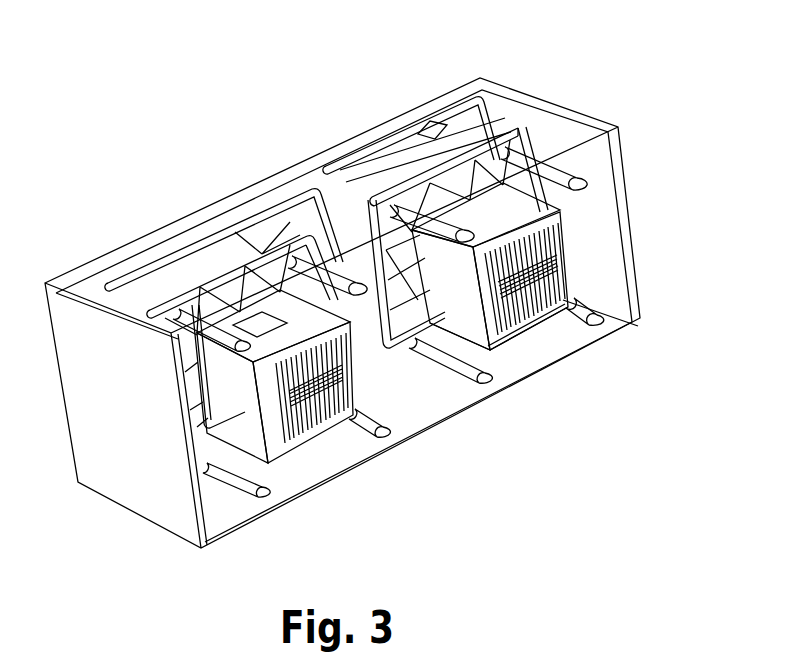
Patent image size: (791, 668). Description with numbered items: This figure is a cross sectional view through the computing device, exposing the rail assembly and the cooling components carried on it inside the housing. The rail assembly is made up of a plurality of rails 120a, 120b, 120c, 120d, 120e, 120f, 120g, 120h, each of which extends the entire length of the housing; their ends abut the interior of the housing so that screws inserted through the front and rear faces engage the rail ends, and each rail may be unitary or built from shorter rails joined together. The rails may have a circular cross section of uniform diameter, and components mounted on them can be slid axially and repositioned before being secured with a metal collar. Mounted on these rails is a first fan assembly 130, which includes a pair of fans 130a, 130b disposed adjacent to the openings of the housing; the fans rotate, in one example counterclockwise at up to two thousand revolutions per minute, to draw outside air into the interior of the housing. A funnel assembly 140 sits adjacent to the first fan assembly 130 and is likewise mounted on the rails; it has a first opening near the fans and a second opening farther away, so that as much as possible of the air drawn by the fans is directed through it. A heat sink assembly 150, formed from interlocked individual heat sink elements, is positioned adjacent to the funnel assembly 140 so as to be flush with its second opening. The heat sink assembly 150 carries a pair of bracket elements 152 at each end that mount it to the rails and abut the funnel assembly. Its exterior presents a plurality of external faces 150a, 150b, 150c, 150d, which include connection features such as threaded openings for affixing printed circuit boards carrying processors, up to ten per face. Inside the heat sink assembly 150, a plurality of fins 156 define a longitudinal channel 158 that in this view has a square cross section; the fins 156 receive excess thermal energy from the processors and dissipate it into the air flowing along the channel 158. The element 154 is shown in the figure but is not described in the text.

The first fan assembly 130 is at (117, 277).
The fan 130a is at (200, 240).
The fan 130b is at (422, 130).
The funnel assembly 140 is at (497, 130).
The bracket elements 152 is at (517, 137).
The mounting plate 154 is at (272, 325).
The fins 156 is at (534, 333).
The longitudinal channel 158 is at (552, 284).
The heat sink assembly 150 is at (317, 437).
The external face 150a is at (230, 433).
The external face 150b is at (547, 200).
The external face 150c is at (577, 268).
The external face 150d is at (553, 326).
The rail 120a is at (175, 310).
The rail 120b is at (308, 262).
The rail 120c is at (446, 226).
The rail 120d is at (563, 167).
The rail 120e is at (595, 327).
The rail 120f is at (481, 383).
The rail 120g is at (377, 432).
The rail 120h is at (262, 494).